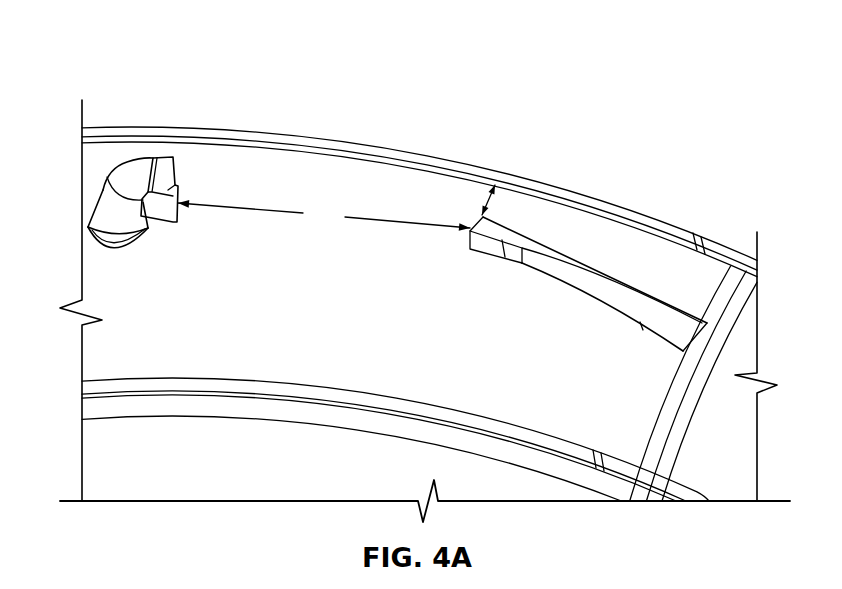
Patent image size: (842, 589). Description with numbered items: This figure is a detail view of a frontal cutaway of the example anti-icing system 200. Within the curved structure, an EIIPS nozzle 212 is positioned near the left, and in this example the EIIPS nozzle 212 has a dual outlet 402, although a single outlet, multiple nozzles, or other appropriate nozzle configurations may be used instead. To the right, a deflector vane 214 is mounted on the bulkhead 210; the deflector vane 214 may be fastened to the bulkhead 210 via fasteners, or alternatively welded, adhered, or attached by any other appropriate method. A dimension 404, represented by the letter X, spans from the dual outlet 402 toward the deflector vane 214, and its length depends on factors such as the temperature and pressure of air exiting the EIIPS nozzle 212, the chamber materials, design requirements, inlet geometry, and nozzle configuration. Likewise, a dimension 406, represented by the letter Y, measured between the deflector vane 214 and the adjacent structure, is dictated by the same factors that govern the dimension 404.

The anti-icing system 200 is at (126, 54).
The bulkhead 210 is at (247, 338).
The EIIPS nozzle 212 is at (137, 175).
The deflector vane 214 is at (537, 267).
The dual outlet 402 is at (163, 172).
The dimension X 404 is at (323, 232).
The dimension Y 406 is at (463, 192).